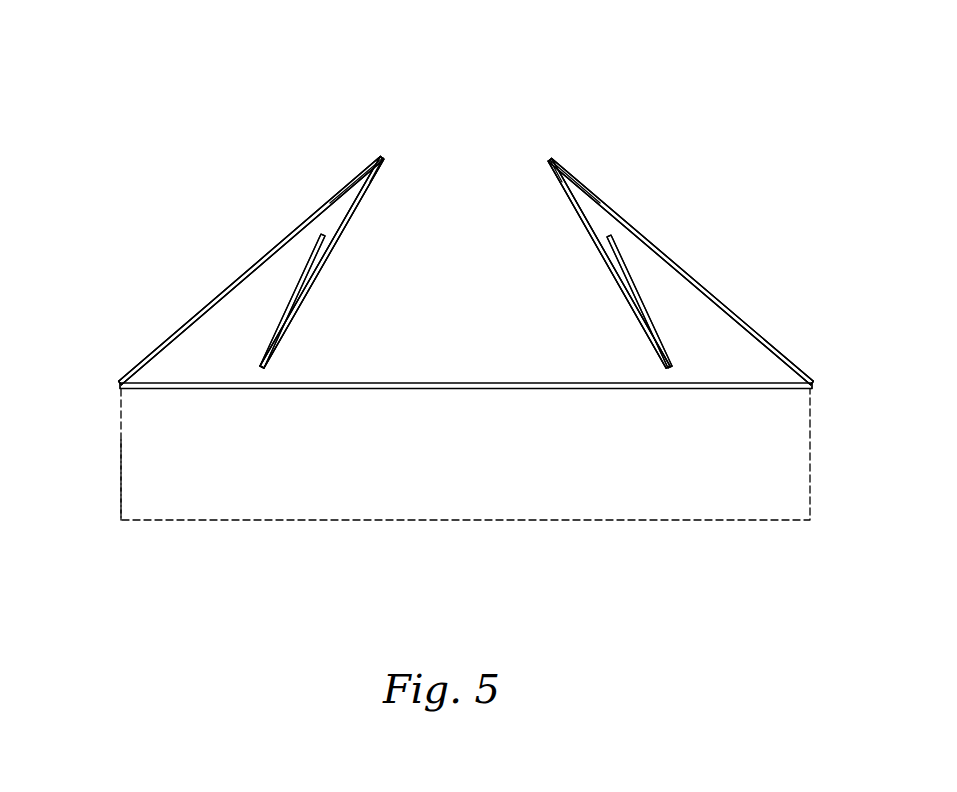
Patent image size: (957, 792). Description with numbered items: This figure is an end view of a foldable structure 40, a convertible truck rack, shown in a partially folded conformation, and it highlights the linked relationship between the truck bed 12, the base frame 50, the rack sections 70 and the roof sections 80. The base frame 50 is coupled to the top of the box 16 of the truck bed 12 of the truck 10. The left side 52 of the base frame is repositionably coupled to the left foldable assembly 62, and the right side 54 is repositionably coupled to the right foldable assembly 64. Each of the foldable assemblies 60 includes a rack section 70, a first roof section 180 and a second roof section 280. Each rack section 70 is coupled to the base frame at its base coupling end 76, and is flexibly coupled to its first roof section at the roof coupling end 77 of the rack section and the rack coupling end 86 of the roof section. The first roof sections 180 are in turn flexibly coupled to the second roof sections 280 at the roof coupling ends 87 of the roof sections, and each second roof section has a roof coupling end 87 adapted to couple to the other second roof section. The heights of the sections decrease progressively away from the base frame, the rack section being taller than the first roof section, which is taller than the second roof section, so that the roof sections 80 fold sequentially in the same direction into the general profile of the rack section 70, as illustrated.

The vehicle 10 is at (246, 67).
The truck bed 12 is at (121, 432).
The box 16 is at (121, 453).
The foldable structure 40 is at (164, 172).
The base frame 50 is at (392, 398).
The left side 52 is at (138, 389).
The right side 54 is at (795, 389).
The foldable assembly 60 is at (216, 289).
The left foldable assembly 62 is at (276, 246).
The right foldable assembly 64 is at (687, 275).
The rack section 70 is at (306, 220).
The base coupling end 76 is at (118, 378).
The roof coupling end 77 is at (344, 188).
The roof section 80 is at (332, 250).
The rack coupling end 86 is at (371, 183).
The roof coupling end 87 is at (259, 364).
The first roof section 180 is at (315, 279).
The second roof section 280 is at (284, 316).